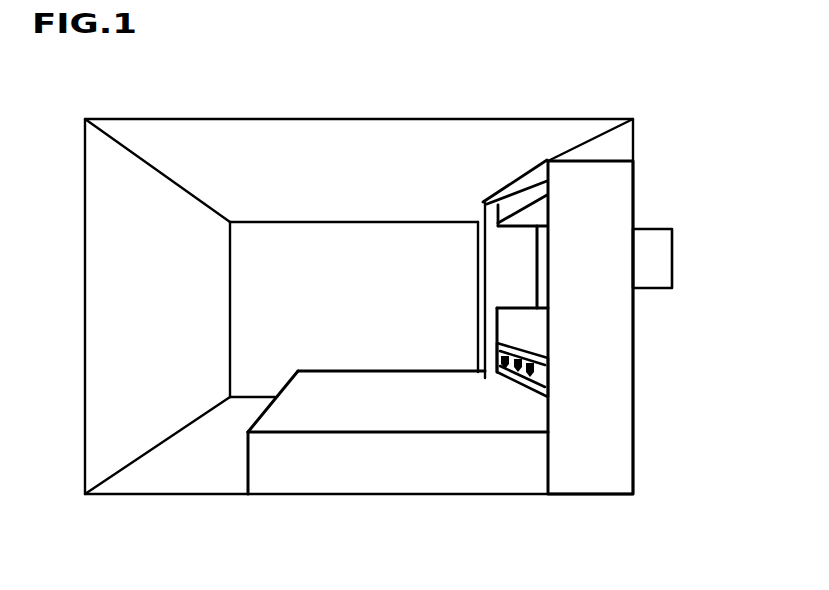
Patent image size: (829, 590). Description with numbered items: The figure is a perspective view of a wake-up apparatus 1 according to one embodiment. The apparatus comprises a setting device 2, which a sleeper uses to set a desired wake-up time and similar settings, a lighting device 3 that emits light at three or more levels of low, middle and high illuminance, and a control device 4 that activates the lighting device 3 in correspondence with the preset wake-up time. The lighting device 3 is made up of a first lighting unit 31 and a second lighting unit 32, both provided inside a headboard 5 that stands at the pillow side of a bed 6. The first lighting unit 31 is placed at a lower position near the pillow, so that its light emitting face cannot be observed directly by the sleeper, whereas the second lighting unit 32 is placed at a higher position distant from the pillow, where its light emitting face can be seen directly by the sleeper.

The wake-up apparatus 1 is at (354, 504).
The setting device 2 is at (517, 413).
The lighting device 3 is at (455, 145).
The first lighting unit 31 is at (515, 333).
The second lighting unit 32 is at (483, 203).
The control device 4 is at (657, 227).
The headboard 5 is at (612, 418).
The bed 6 is at (303, 457).